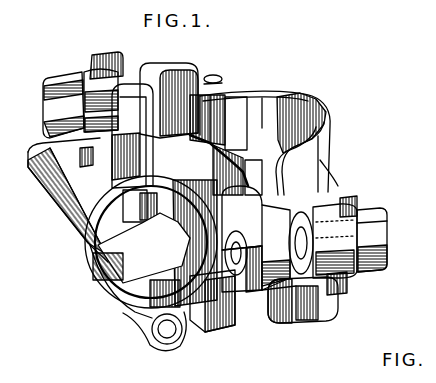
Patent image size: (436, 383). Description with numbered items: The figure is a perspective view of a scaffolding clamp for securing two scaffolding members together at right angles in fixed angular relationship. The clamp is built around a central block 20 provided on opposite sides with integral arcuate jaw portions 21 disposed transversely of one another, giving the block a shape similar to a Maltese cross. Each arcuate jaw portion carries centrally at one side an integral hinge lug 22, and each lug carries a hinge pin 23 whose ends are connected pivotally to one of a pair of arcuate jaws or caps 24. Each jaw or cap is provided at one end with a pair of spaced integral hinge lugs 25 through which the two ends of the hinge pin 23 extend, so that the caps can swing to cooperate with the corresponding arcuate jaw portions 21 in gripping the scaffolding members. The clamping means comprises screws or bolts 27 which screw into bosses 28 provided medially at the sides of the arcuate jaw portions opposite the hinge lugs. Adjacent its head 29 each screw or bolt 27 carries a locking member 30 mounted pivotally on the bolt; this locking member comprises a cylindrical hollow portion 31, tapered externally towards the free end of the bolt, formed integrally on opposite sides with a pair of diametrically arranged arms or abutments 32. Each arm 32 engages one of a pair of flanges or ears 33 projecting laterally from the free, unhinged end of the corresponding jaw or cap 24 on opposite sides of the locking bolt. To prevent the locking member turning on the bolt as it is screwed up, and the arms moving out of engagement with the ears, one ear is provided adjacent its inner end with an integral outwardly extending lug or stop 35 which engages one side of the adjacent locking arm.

The central block 20 is at (240, 132).
The arcuate jaw portions 21 is at (221, 134).
The hinge lug 22 is at (104, 290).
The hinge pin 23 is at (214, 76).
The arcuate jaws or caps 24 is at (305, 100).
The hinge lugs 25 is at (222, 83).
The screws or bolts 27 is at (58, 82).
The bosses 28 is at (173, 66).
The head 29 is at (380, 258).
The locking member 30 is at (97, 80).
The cylindrical hollow portion 31 is at (372, 228).
The arms or abutments 32 is at (80, 157).
The flanges or ears 33 is at (110, 55).
The lug or stop 35 is at (100, 140).